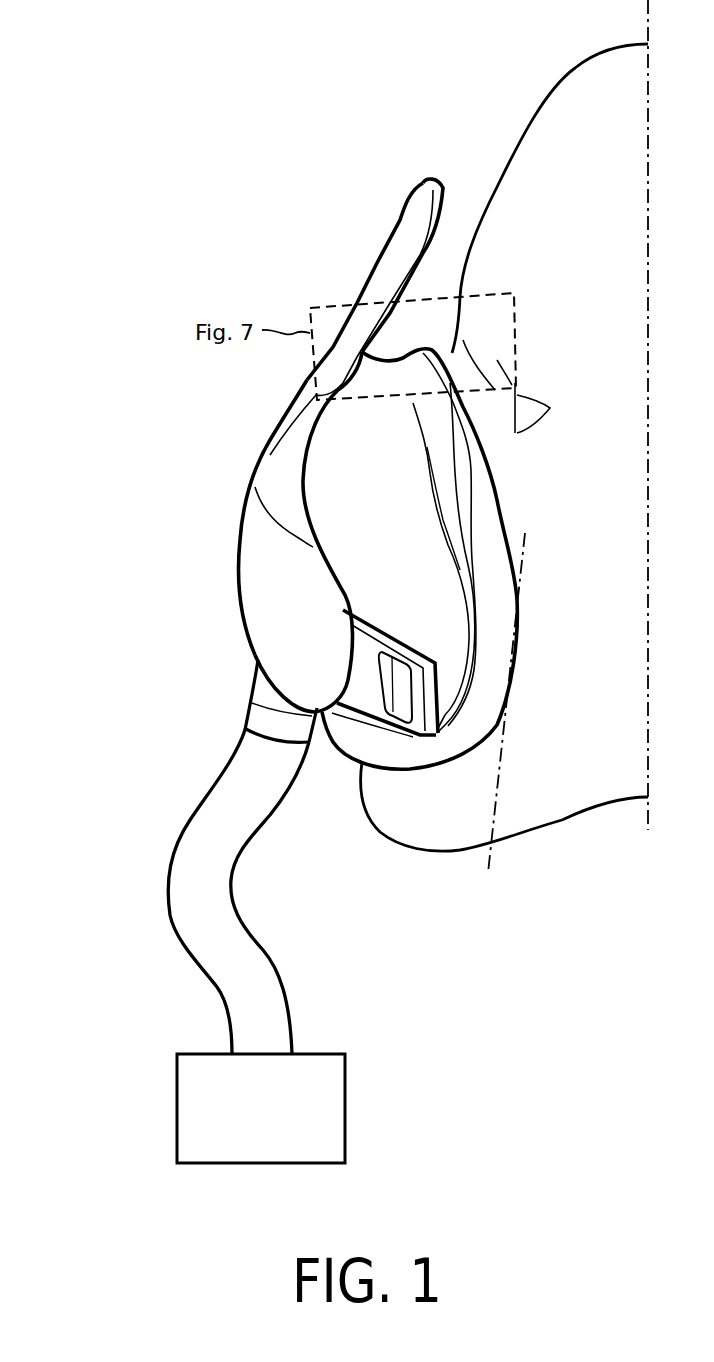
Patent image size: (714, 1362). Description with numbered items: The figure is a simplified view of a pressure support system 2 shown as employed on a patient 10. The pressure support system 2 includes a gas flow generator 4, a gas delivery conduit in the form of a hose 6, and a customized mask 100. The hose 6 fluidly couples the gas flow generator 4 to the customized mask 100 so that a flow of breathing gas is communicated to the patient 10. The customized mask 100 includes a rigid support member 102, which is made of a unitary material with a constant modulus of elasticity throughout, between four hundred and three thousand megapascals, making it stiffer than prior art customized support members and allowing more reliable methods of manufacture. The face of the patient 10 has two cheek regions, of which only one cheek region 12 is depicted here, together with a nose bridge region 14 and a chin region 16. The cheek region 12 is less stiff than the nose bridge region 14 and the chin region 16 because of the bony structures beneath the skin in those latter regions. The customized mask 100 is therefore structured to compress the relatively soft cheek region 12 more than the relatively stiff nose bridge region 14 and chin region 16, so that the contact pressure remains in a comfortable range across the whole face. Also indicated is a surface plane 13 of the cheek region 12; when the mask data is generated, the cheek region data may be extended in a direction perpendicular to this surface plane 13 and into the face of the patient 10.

The pressure support system 2 is at (86, 358).
The gas flow generator 4 is at (177, 1110).
The hose 6 is at (172, 899).
The patient 10 is at (566, 59).
The cheek region 12 is at (537, 656).
The surface plane 13 is at (502, 774).
The nose bridge region 14 is at (445, 352).
The chin region 16 is at (423, 827).
The customized mask 100 is at (234, 515).
The support member 102 is at (234, 607).